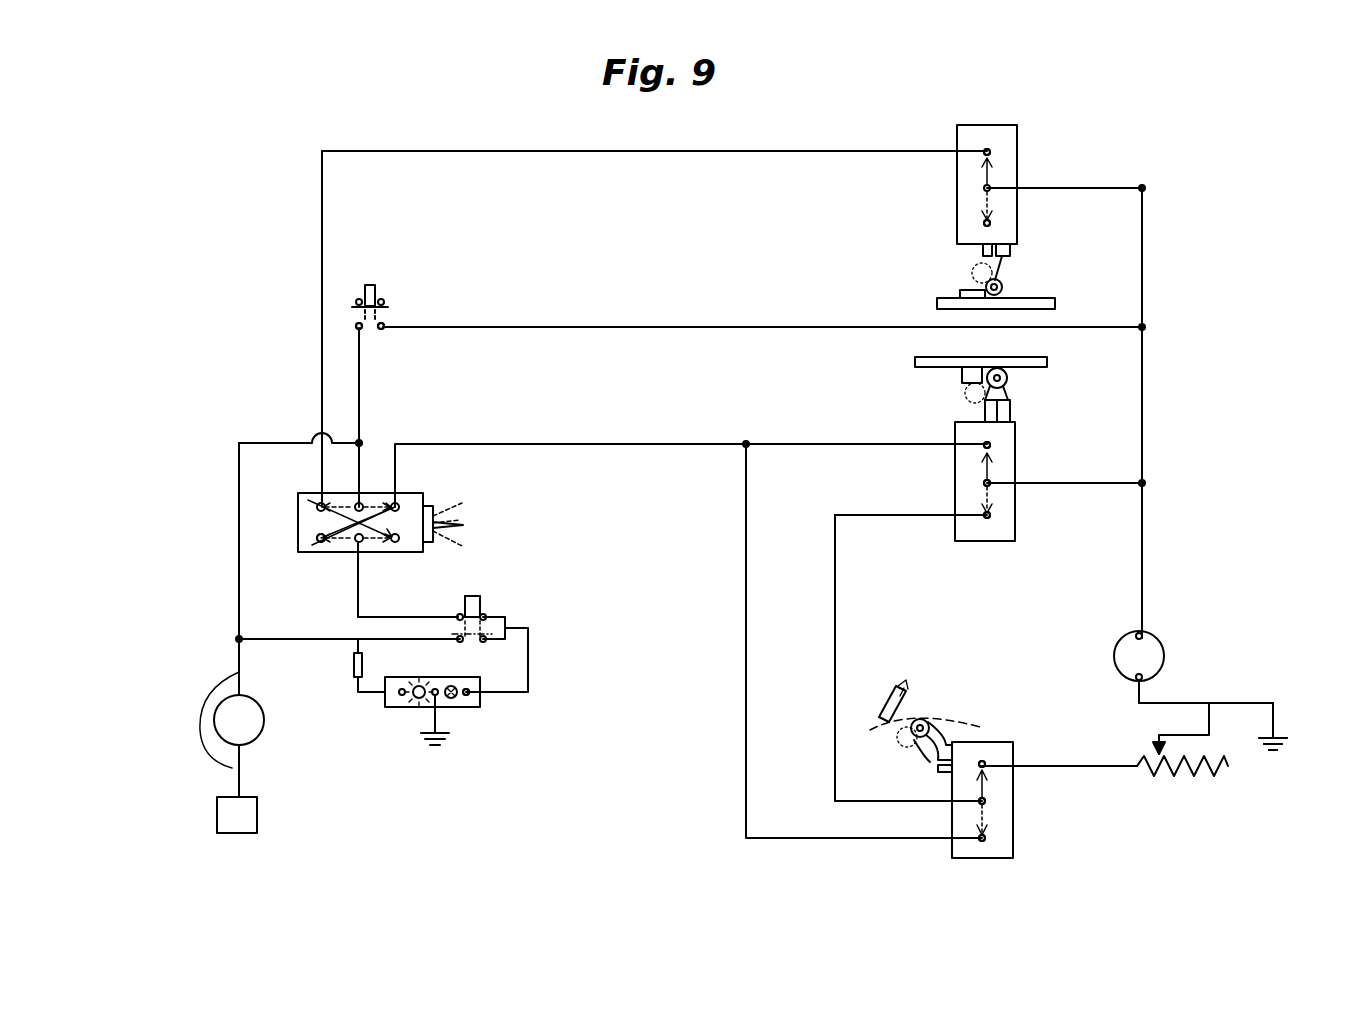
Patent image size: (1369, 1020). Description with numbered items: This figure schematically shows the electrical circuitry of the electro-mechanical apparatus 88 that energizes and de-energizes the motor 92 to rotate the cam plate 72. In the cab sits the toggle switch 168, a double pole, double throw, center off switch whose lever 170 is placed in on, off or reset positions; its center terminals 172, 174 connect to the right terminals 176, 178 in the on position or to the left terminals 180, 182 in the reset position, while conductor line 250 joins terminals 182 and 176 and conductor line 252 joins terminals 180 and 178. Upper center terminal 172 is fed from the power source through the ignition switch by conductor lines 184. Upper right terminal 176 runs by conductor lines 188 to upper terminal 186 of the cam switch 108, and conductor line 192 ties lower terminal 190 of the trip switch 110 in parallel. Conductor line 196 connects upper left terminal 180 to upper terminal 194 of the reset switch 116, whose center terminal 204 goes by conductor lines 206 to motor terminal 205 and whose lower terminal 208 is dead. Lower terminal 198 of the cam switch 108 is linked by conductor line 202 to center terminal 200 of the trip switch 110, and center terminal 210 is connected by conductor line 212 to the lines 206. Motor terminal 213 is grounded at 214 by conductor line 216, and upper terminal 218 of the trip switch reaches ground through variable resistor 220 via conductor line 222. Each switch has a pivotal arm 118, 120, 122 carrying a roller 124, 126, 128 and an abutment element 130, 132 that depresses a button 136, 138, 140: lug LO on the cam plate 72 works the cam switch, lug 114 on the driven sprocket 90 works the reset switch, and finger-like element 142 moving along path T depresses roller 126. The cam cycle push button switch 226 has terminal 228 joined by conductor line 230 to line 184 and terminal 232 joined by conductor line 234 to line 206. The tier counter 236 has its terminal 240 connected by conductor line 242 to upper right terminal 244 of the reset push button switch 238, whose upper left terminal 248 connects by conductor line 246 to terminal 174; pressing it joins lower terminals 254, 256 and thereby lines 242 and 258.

The electro-mechanical apparatus 88 is at (275, 120).
The conductor line 196 is at (467, 150).
The conductor lines 184 is at (304, 443).
The manual push button switch 226 is at (382, 252).
The terminal 228 is at (362, 330).
The terminal 232 is at (385, 328).
The conductor line 230 is at (360, 388).
The conductor line 234 is at (645, 327).
The toggle switch 168 is at (430, 488).
The lever 170 is at (465, 522).
The upper center terminal 172 is at (360, 500).
The lower center terminal 174 is at (360, 542).
The upper right terminal 176 is at (396, 500).
The lower right terminal 178 is at (396, 542).
The upper left terminal 180 is at (318, 500).
The lower left terminal 182 is at (319, 540).
The conductor line 250 is at (335, 527).
The conductor line 252 is at (319, 530).
The conductor lines 188 is at (774, 444).
The conductor line 192 is at (746, 738).
The conductor line 242 is at (528, 664).
The tier counter reset push button switch 238 is at (475, 596).
The upper right terminal 244 is at (485, 614).
The conductor line 246 is at (456, 617).
The upper left terminal 248 is at (450, 619).
The lower terminal 254 is at (484, 642).
The lower terminal 256 is at (458, 642).
The conductor line 258 is at (314, 639).
The tier counter 236 is at (402, 708).
The numerical indication terminal 240 is at (467, 697).
The third switch 116 is at (1025, 207).
The upper terminal 194 is at (985, 148).
The center terminal 204 is at (984, 188).
The lower terminal 208 is at (984, 223).
The conductor lines 206 is at (1152, 210).
The depressible button 140 is at (981, 250).
The pivotal arm 122 is at (1005, 262).
The roller 128 is at (1003, 285).
The block or lug 114 is at (958, 294).
The driven sprocket 90 is at (1058, 302).
The cam plate 72 is at (985, 356).
The lug LO is at (960, 376).
The roller 124 is at (987, 380).
The pivotal arm 118 is at (965, 394).
The abutment element 130 is at (985, 400).
The depressible button 136 is at (985, 418).
The first switch 108 is at (1025, 432).
The upper terminal 186 is at (990, 447).
The center terminal 210 is at (984, 483).
The conductor line 212 is at (1072, 483).
The lower terminal 198 is at (990, 515).
The conductor line 202 is at (836, 606).
The second switch 110 is at (1025, 742).
The upper terminal 218 is at (984, 760).
The center terminal 200 is at (978, 803).
The lower terminal 190 is at (985, 842).
The conductor line 222 is at (1048, 766).
The pivotal arm 120 is at (927, 722).
The roller 126 is at (908, 732).
The abutment element 132 is at (922, 758).
The depressible button 138 is at (940, 772).
The finger-like element 142 is at (900, 688).
The path T is at (865, 699).
The electric motor 92 is at (1160, 650).
The terminal 205 is at (1135, 636).
The terminal 213 is at (1136, 680).
The conductor line 216 is at (1178, 703).
The ground 214 is at (1288, 744).
The variable resistor 220 is at (1237, 770).